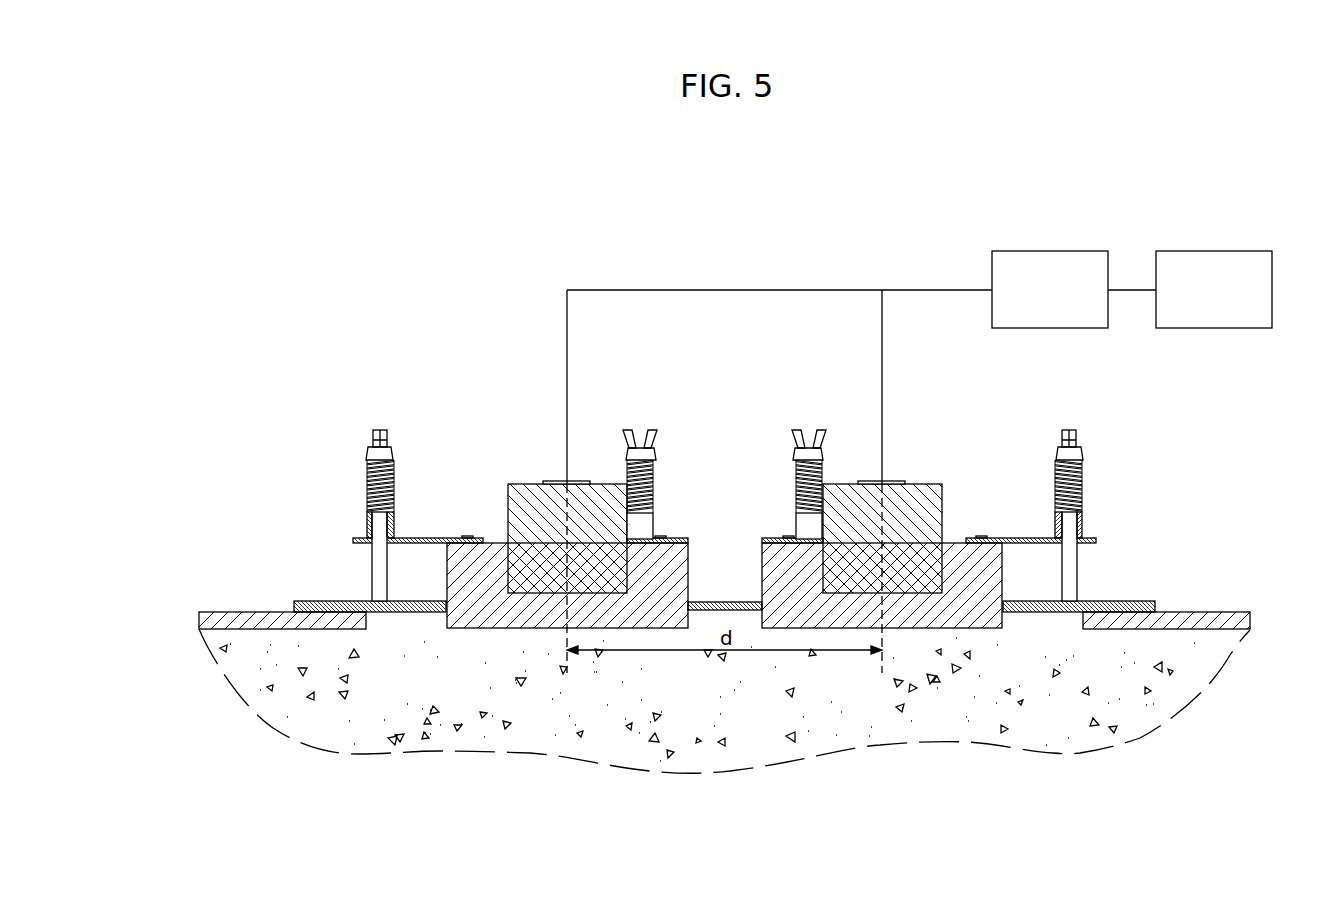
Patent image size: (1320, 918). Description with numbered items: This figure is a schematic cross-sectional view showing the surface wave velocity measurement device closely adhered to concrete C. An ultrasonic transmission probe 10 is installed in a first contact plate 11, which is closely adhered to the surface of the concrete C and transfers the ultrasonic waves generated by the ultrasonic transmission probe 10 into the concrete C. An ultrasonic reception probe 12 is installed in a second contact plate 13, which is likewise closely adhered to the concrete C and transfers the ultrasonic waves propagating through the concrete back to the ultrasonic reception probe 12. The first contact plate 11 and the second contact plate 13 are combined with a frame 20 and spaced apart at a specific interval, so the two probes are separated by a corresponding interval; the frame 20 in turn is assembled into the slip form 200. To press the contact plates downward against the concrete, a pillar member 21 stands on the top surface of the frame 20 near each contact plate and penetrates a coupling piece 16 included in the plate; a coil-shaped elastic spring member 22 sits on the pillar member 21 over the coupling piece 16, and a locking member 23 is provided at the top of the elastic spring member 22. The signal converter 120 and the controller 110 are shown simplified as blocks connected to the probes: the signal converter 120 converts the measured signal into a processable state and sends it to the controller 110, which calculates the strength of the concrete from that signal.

The ultrasonic transmission probe 10 is at (530, 466).
The first contact plate 11 is at (672, 565).
The ultrasonic reception probe 12 is at (917, 495).
The second contact plate 13 is at (954, 553).
The coupling piece 16 is at (425, 538).
The frame 20 is at (318, 607).
The pillar member 21 is at (378, 568).
The elastic spring member 22 is at (368, 484).
The locking member 23 is at (388, 450).
The slip form 200 is at (248, 612).
The controller 110 is at (1201, 251).
The signal converter 120 is at (1042, 251).
The concrete C is at (383, 725).